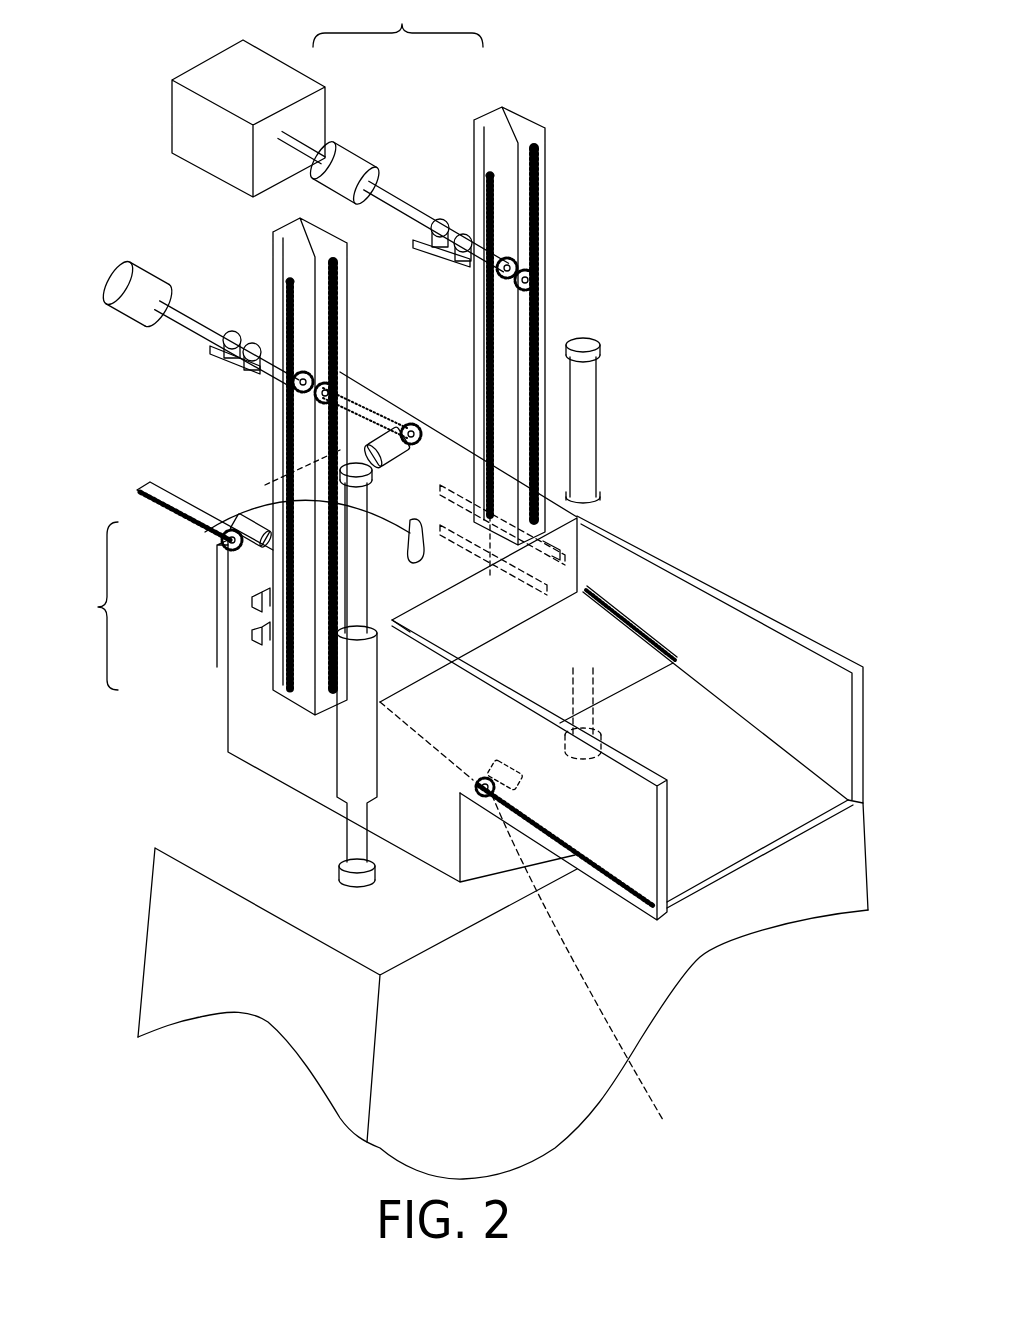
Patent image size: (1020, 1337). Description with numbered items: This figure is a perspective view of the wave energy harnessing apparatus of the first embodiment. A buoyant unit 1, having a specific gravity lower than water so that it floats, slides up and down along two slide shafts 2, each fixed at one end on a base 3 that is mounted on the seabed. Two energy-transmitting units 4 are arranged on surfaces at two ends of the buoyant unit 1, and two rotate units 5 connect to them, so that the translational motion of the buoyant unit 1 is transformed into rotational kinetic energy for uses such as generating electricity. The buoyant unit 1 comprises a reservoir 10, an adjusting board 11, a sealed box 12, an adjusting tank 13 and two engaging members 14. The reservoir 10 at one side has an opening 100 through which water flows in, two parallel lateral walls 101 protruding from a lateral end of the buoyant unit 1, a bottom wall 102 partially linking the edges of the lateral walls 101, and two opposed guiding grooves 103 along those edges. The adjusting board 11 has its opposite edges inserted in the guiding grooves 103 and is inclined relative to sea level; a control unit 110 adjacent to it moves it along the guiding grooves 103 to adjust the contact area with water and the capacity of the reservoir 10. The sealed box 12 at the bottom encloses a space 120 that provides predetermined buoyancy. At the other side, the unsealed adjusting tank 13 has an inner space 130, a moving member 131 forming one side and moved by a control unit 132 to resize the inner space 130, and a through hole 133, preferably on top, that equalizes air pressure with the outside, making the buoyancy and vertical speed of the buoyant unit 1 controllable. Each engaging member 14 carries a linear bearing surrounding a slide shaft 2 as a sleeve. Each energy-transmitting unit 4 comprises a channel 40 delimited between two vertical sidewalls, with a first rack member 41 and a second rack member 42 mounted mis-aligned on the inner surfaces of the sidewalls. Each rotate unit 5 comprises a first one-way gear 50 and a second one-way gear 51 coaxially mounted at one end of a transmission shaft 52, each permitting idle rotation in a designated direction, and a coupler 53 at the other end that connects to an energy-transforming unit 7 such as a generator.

The buoyant unit 1 is at (640, 522).
The slide shaft 2 is at (596, 382).
The base 3 is at (355, 1115).
The energy-transmitting unit 4 is at (533, 306).
The rotate unit 5 is at (412, 22).
The energy-transforming unit 7 is at (200, 152).
The reservoir 10 is at (641, 814).
The adjusting board 11 is at (742, 747).
The sealed box 12 is at (248, 742).
The adjusting tank 13 is at (88, 623).
The engaging member 14 is at (605, 497).
The channel 40 is at (495, 117).
The first rack member 41 is at (547, 168).
The second rack member 42 is at (503, 327).
The first one-way gear 50 is at (523, 260).
The second one-way gear 51 is at (487, 230).
The transmission shaft 52 is at (400, 190).
The coupler 53 is at (343, 165).
The opening 100 is at (865, 685).
The lateral wall 101 is at (700, 583).
The bottom wall 102 is at (552, 643).
The guiding groove 103 is at (643, 637).
The control unit 110 is at (550, 928).
The space 120 is at (298, 760).
The inner space 130 is at (258, 663).
The moving member 131 is at (218, 645).
The control unit 132 is at (222, 573).
The through hole 133 is at (207, 532).